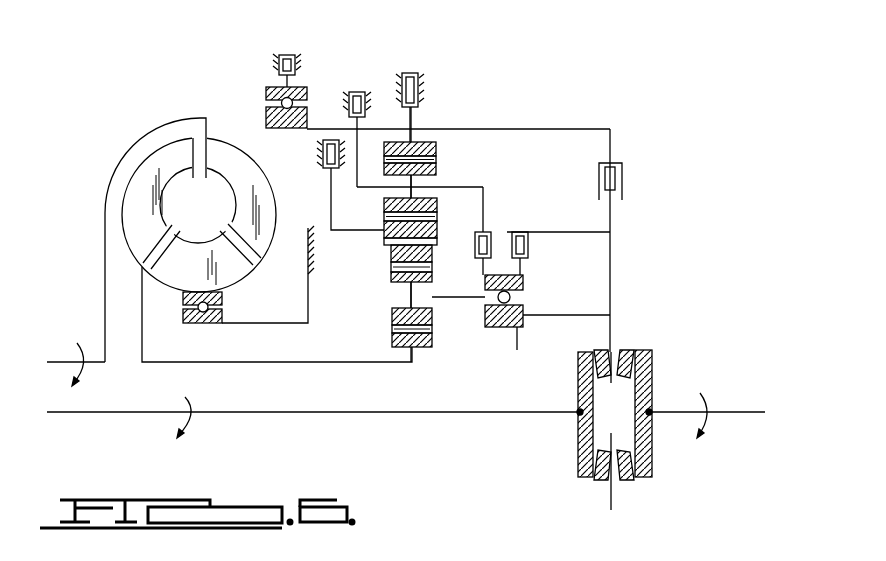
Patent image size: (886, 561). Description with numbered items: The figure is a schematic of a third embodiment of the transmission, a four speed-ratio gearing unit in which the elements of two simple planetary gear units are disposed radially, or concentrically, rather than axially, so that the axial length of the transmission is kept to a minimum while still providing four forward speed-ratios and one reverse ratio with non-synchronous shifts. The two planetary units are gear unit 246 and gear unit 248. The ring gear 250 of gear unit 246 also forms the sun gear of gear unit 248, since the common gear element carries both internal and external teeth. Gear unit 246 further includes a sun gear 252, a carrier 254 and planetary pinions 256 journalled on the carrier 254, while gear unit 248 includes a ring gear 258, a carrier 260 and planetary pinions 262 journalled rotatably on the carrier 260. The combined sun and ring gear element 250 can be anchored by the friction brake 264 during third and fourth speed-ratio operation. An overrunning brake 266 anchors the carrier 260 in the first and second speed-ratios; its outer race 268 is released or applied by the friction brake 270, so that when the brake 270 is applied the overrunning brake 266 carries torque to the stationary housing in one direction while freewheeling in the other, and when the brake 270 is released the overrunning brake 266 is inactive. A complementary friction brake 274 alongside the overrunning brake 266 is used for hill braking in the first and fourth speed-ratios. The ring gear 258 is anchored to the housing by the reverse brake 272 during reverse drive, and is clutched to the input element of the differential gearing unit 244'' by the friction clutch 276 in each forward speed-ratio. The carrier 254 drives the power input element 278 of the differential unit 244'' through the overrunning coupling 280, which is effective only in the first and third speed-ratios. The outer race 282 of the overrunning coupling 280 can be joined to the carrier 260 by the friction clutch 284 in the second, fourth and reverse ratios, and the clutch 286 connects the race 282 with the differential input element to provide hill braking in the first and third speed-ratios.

The differential gearing unit 244'' is at (663, 416).
The gear unit 246 is at (433, 352).
The gear unit 248 is at (438, 152).
The ring gear 250 is at (391, 258).
The sun gear 252 is at (392, 340).
The carrier 254 is at (472, 298).
The planetary pinions 256 is at (398, 288).
The ring gear 258 is at (424, 143).
The carrier 260 is at (462, 187).
The planetary pinions 262 is at (385, 209).
The friction brake 264 is at (323, 160).
The overrunning brake 266 is at (267, 118).
The outer race 268 is at (267, 90).
The friction brake 270 is at (296, 53).
The reverse brake 272 is at (420, 73).
The friction brake 274 is at (357, 92).
The friction clutch 276 is at (616, 171).
The power input element 278 is at (598, 316).
The overrunning coupling 280 is at (517, 350).
The outer race 282 is at (523, 286).
The friction clutch 284 is at (495, 246).
The clutch 286 is at (528, 250).